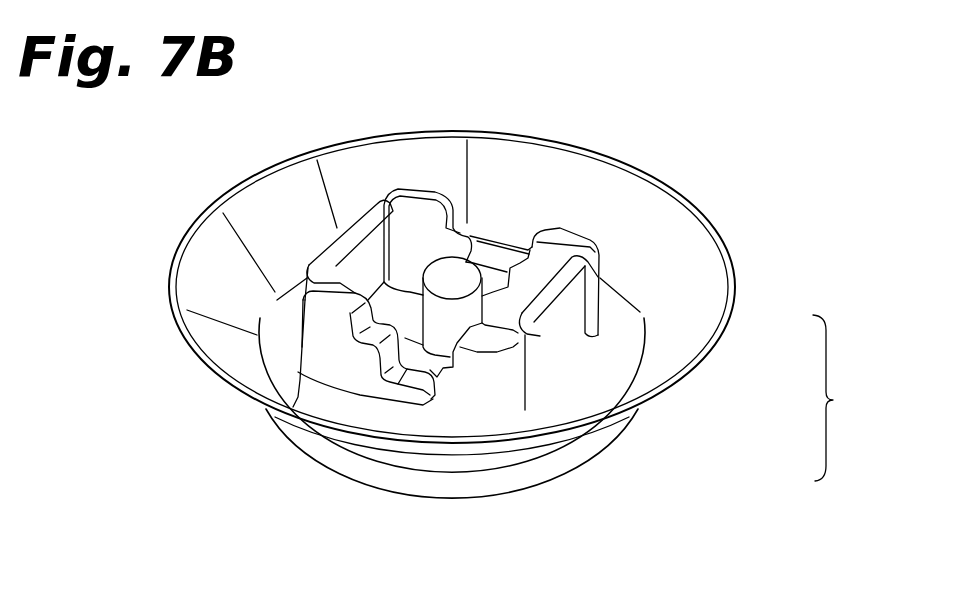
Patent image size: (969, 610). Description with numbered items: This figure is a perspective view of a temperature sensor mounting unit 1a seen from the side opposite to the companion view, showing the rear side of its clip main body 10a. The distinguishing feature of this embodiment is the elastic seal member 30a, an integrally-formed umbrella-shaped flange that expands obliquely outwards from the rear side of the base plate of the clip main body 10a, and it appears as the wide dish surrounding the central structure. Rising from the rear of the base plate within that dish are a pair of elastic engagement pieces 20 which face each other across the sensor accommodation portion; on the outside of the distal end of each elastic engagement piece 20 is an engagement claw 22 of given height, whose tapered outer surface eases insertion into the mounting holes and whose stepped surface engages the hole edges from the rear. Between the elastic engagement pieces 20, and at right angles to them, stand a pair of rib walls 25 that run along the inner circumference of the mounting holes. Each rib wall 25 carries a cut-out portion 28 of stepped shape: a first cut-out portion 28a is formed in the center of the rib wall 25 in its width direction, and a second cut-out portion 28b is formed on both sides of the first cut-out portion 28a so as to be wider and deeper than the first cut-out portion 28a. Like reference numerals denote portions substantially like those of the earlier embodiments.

The temperature sensor mounting unit 1a is at (838, 413).
The clip main body 10a is at (622, 451).
The elastic seal member 30a is at (724, 321).
The elastic engagement piece 20 is at (325, 237).
The engagement claw 22 is at (535, 343).
The rib wall 25 is at (332, 362).
The cut-out portion 28 is at (497, 255).
The first cut-out portion 28a is at (400, 382).
The second cut-out portion 28b is at (367, 343).